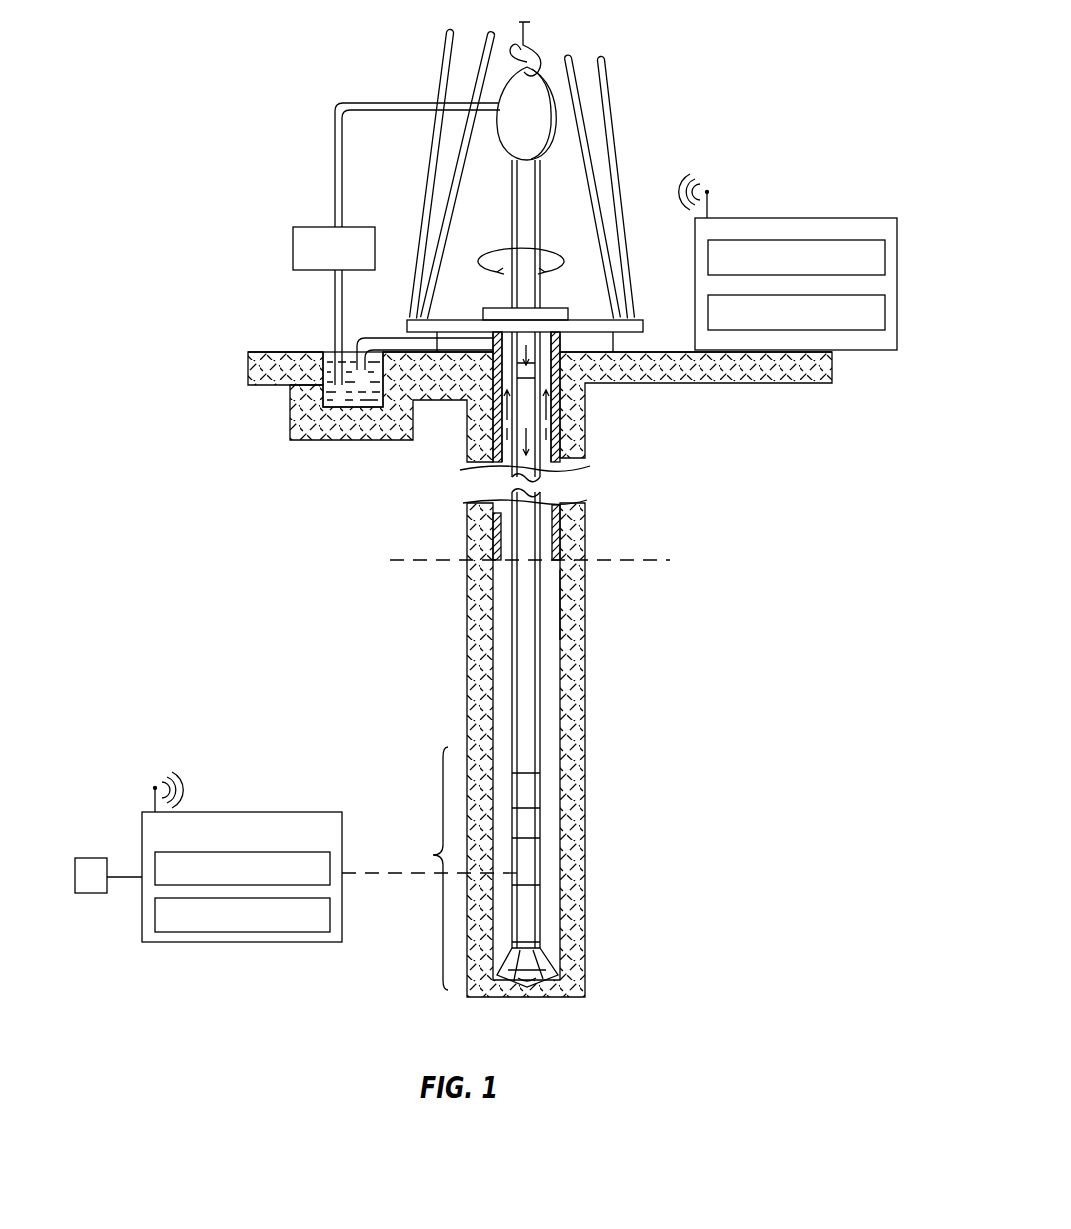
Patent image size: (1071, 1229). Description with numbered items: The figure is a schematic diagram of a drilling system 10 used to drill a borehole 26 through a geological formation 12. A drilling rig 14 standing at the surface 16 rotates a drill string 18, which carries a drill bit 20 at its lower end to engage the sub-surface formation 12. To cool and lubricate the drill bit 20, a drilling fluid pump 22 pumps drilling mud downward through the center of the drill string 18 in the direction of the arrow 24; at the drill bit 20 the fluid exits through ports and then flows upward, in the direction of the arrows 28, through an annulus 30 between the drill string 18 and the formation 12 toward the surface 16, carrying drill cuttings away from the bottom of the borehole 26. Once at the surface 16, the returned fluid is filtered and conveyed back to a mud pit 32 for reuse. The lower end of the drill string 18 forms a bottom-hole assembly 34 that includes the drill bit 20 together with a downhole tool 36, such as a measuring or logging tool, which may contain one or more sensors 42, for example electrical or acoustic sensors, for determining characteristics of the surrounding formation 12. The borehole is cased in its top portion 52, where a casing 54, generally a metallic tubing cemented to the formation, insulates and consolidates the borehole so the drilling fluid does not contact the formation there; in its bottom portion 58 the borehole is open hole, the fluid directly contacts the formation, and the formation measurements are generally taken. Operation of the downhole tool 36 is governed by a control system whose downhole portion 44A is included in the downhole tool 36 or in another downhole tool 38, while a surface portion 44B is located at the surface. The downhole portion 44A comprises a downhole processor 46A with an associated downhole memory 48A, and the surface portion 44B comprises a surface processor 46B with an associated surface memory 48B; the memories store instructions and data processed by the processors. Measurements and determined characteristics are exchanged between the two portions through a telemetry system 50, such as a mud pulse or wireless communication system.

The drilling system 10 is at (653, 50).
The geological formation 12 is at (684, 692).
The drilling rig 14 is at (624, 118).
The surface 16 is at (686, 348).
The drill string 18 is at (524, 344).
The drill bit 20 is at (531, 967).
The drilling fluid pump 22 is at (310, 270).
The arrow 24 is at (512, 472).
The borehole 26 is at (498, 642).
The arrows 28 is at (503, 428).
The annulus 30 is at (546, 338).
The mud pit 32 is at (350, 407).
The bottom-hole assembly 34 is at (428, 868).
The downhole tool 36 is at (527, 792).
The other downhole tool 38 is at (527, 870).
The sensor 42 is at (90, 858).
The downhole portion of control system 44A is at (310, 812).
The surface portion of control system 44B is at (810, 218).
The downhole processor 46A is at (330, 868).
The surface processor 46B is at (885, 270).
The downhole memory 48A is at (330, 915).
The surface memory 48B is at (885, 325).
The telemetry system 50 is at (711, 190).
The top portion of borehole 52 is at (562, 553).
The casing 54 is at (490, 512).
The bottom portion of borehole 58 is at (556, 602).